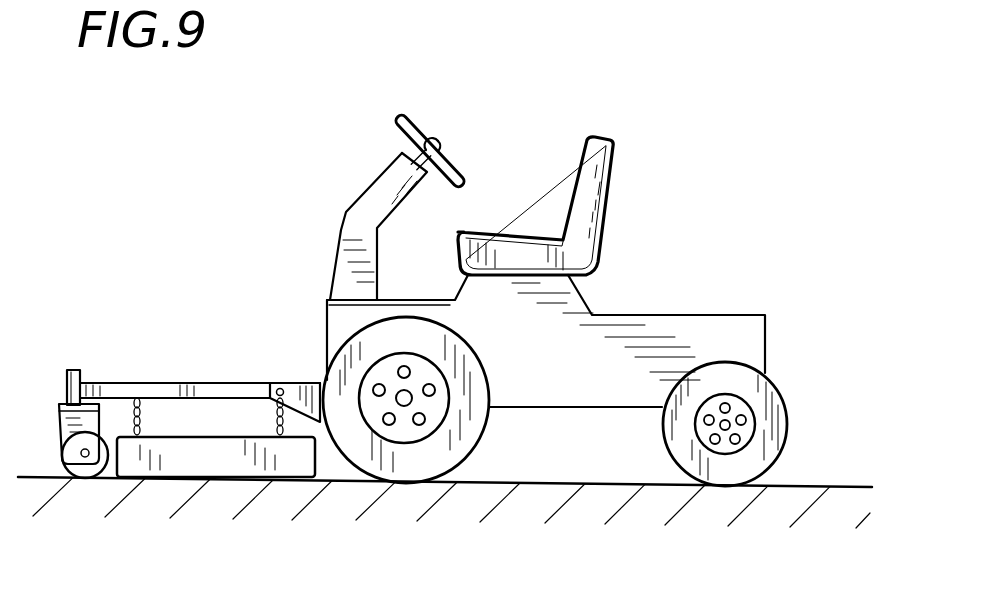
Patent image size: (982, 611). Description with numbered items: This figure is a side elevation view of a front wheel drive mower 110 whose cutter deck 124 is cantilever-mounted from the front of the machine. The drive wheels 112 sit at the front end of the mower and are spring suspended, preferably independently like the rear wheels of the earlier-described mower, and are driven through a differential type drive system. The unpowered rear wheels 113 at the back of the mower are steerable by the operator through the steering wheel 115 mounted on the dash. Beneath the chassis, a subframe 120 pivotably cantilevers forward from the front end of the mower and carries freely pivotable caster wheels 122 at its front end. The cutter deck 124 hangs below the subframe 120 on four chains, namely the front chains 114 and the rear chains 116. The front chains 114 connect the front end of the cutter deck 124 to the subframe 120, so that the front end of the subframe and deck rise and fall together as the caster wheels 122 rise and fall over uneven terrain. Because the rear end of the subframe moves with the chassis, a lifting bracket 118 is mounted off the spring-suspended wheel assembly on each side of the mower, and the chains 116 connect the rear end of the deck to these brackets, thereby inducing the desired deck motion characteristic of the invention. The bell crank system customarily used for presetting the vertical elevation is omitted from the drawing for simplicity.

The mower 110 is at (668, 296).
The drive wheels 112 is at (481, 438).
The rear wheels 113 is at (782, 397).
The front chains 114 is at (168, 406).
The steering wheel 115 is at (418, 128).
The chains 116 is at (272, 412).
The lifting bracket 118 is at (298, 390).
The subframe 120 is at (110, 382).
The caster wheels 122 is at (62, 483).
The cutter deck 124 is at (218, 462).